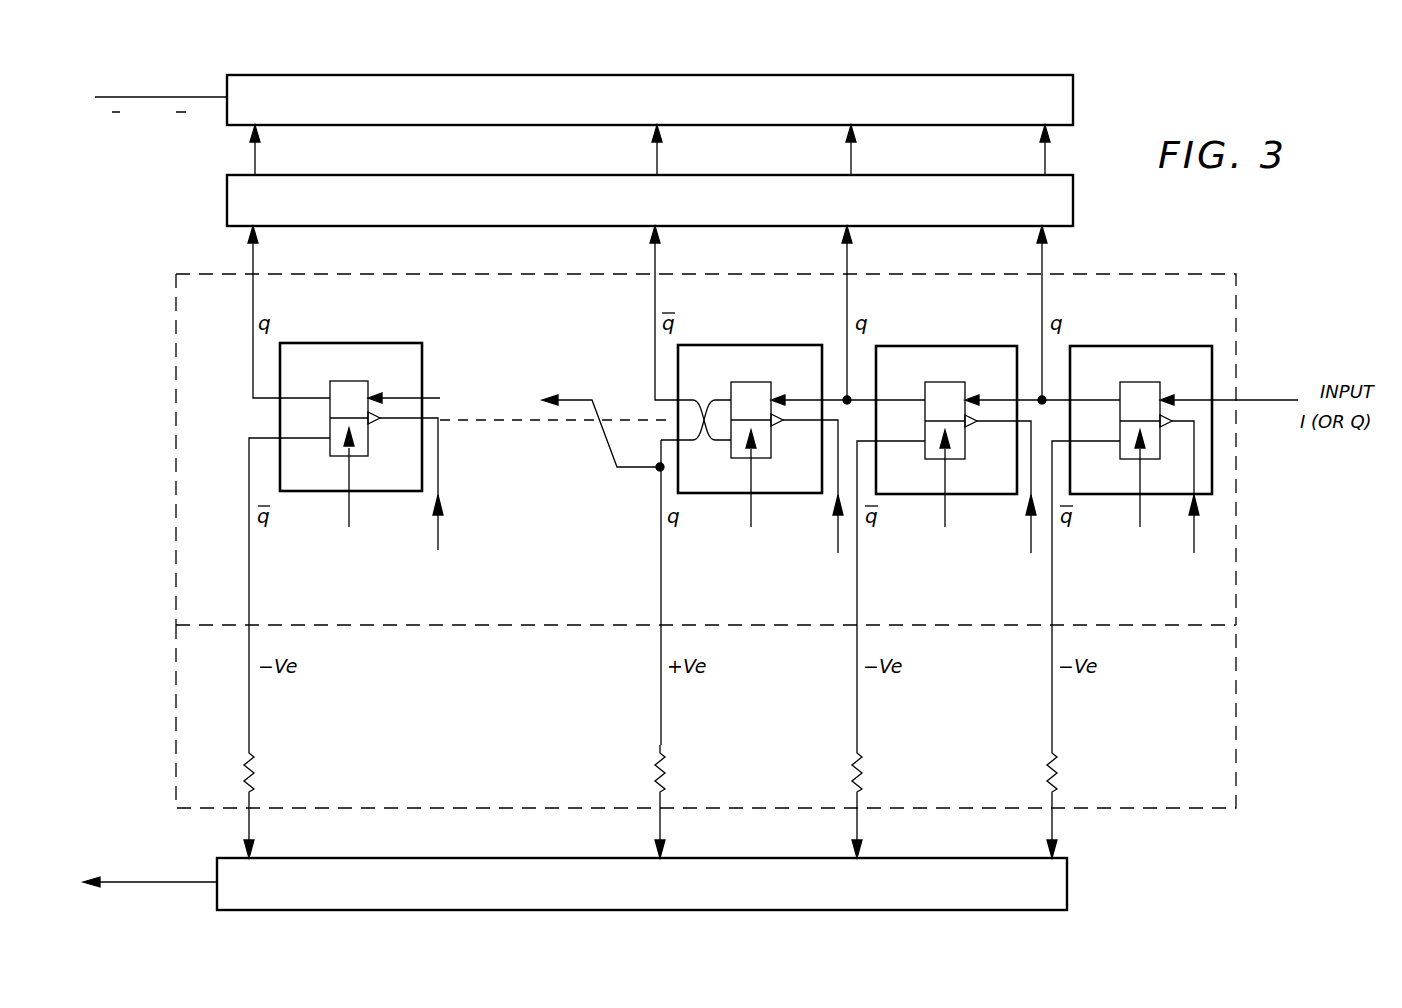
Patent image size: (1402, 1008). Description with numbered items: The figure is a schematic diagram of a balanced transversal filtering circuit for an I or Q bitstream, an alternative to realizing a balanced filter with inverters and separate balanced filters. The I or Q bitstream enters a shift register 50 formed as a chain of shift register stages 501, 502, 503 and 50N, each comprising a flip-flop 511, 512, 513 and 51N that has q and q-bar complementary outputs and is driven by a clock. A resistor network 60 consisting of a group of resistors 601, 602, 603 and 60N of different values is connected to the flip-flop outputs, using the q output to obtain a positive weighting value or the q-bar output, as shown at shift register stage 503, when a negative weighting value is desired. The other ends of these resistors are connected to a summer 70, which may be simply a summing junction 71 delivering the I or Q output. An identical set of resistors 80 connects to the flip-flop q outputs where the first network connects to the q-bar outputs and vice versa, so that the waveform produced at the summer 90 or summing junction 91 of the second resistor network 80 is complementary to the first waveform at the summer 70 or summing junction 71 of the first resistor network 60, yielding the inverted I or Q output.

The shift register 50 is at (1237, 535).
The resistor network 60 is at (1237, 725).
The summer 70 is at (1068, 884).
The summing junction 71 is at (148, 884).
The second resistor network 80 is at (1074, 202).
The summer 90 is at (1074, 100).
The summing junction 91 is at (160, 95).
The shift register stage 50N is at (372, 441).
The shift register stage 503 is at (761, 441).
The shift register stage 502 is at (956, 441).
The shift register stage 501 is at (1147, 441).
The flip-flop 51N is at (351, 468).
The flip-flop 513 is at (754, 468).
The flip-flop 512 is at (948, 468).
The flip-flop 511 is at (1143, 468).
The resistor 60N is at (254, 776).
The resistor 603 is at (665, 776).
The resistor 602 is at (862, 776).
The resistor 601 is at (1057, 776).